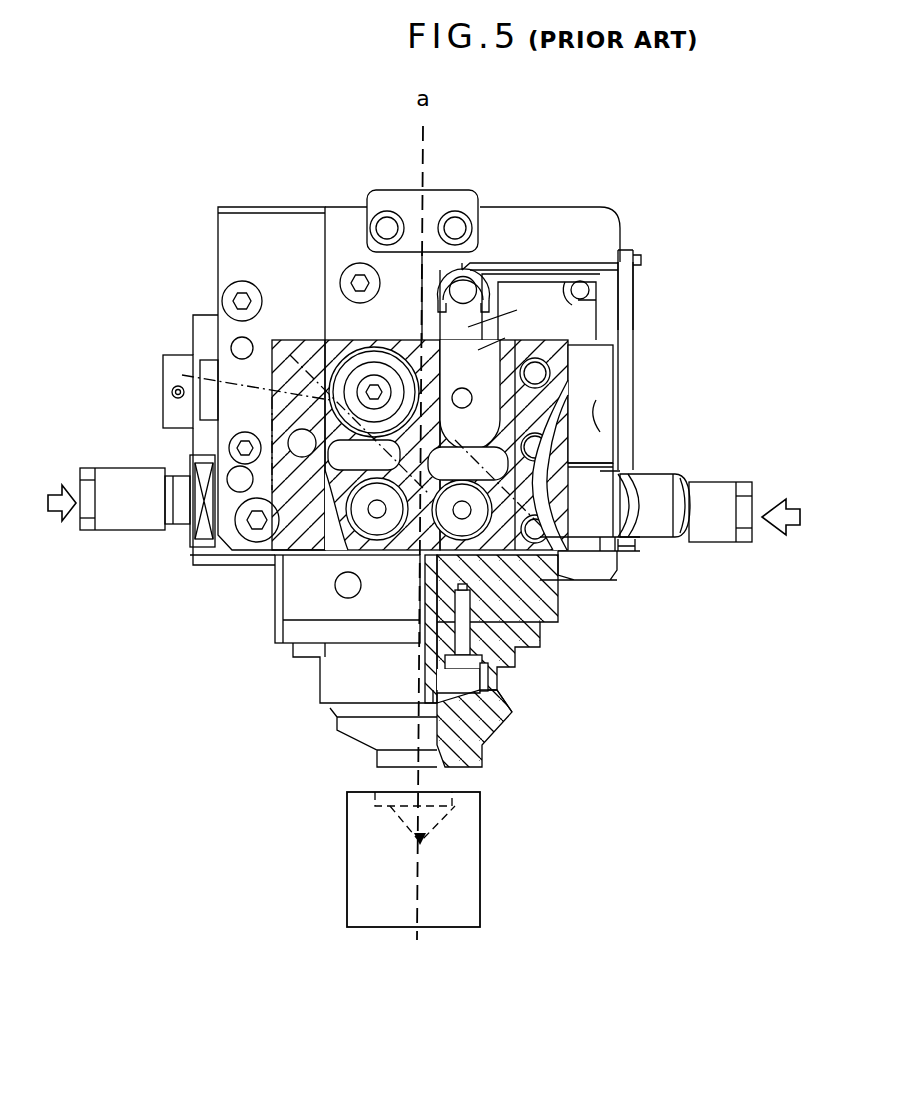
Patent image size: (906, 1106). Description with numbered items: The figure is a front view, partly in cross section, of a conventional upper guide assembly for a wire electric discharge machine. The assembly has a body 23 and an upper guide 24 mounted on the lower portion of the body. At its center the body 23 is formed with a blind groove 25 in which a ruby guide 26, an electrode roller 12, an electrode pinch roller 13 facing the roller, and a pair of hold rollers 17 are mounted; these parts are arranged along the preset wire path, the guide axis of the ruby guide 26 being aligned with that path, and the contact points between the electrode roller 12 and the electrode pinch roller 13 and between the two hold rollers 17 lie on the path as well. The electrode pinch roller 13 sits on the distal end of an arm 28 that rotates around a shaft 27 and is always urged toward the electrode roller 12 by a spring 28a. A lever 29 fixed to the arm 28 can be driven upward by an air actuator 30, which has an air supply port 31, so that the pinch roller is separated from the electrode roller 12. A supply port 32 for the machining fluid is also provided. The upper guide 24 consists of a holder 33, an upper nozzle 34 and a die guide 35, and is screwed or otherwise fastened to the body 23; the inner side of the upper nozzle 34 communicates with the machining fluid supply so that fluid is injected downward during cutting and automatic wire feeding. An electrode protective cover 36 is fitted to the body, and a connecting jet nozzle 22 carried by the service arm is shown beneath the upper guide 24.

The electrode roller 12 is at (335, 363).
The electrode pinch roller 13 is at (548, 383).
The hold rollers 17 is at (312, 558).
The connecting jet nozzle 22 is at (482, 877).
The body 23 is at (250, 240).
The upper guide 24 is at (326, 693).
The blind groove 25 is at (344, 243).
The ruby guide 26 is at (457, 205).
The shaft 27 is at (474, 268).
The arm 28 is at (541, 307).
The spring 28a is at (462, 362).
The lever 29 is at (545, 270).
The air actuator 30 is at (594, 434).
The air supply port 31 is at (716, 503).
The supply port for the machining fluid 32 is at (129, 501).
The holder 33 is at (484, 680).
The upper nozzle 34 is at (488, 748).
The die guide 35 is at (506, 710).
The electrode protective cover 36 is at (182, 373).